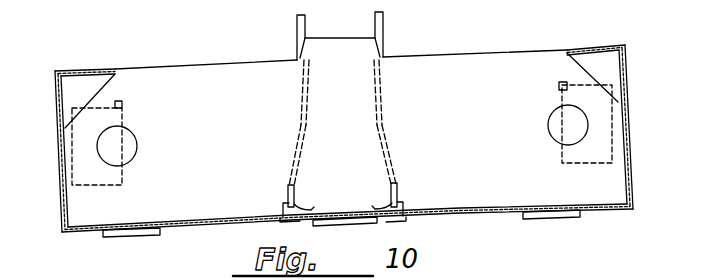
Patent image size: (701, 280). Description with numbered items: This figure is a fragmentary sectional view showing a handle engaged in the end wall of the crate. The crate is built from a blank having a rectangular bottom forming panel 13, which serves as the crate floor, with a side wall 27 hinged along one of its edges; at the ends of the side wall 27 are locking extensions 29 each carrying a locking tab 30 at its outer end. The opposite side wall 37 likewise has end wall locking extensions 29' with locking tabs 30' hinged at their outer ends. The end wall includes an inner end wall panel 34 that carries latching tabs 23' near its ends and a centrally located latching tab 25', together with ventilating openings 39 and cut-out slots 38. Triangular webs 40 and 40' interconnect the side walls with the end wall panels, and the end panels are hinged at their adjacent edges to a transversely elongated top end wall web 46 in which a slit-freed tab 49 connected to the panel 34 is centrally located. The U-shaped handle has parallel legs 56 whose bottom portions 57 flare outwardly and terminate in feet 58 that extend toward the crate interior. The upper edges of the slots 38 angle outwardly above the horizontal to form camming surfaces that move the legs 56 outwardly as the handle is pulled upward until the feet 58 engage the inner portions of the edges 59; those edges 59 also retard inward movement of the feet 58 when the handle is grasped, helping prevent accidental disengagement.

The bottom forming panel 13 is at (500, 215).
The latching tabs 23' is at (341, 234).
The latching tabs 25' is at (345, 230).
The side wall 27 is at (57, 159).
The locking extensions 29 is at (118, 143).
The end wall locking extensions 29' is at (566, 126).
The locking tab 30 is at (90, 101).
The locking tabs 30' is at (592, 77).
The inner end wall panels 34 is at (233, 163).
The side wall 37 is at (630, 128).
The slots 38 is at (291, 220).
The ventilating openings 39 is at (128, 136).
The triangular web 40 is at (85, 59).
The triangular web 40' is at (596, 39).
The top end wall web 46 is at (461, 53).
The slit-freed tab 49 is at (356, 38).
The legs 56 is at (372, 68).
The bottom portions 57 is at (376, 141).
The feet 58 is at (391, 187).
The edges 59 is at (375, 208).